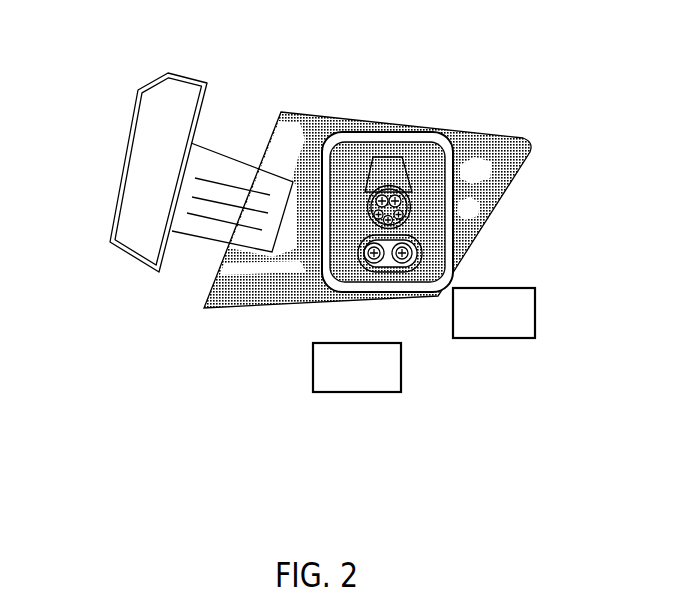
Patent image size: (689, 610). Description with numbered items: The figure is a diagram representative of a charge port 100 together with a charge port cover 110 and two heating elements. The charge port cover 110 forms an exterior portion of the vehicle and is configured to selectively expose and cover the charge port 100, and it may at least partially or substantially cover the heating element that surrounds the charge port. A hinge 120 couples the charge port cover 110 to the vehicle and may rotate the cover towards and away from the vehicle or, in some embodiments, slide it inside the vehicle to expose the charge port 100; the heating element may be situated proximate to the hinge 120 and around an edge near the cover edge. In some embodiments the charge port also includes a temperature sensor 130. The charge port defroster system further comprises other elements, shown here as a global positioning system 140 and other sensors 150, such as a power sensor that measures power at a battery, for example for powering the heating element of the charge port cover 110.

The charge port 100 is at (377, 107).
The charge port cover 110 is at (168, 110).
The hinge 120 is at (225, 245).
The temperature sensor 130 is at (402, 155).
The global positioning system (GPS) 140 is at (535, 312).
The other sensors 150 is at (401, 365).